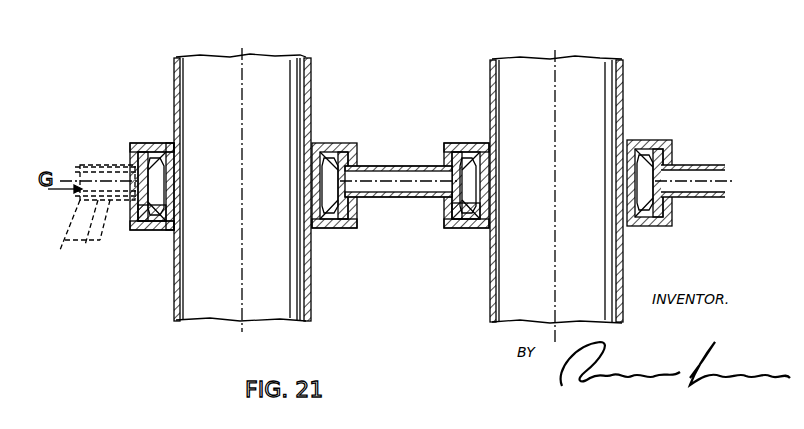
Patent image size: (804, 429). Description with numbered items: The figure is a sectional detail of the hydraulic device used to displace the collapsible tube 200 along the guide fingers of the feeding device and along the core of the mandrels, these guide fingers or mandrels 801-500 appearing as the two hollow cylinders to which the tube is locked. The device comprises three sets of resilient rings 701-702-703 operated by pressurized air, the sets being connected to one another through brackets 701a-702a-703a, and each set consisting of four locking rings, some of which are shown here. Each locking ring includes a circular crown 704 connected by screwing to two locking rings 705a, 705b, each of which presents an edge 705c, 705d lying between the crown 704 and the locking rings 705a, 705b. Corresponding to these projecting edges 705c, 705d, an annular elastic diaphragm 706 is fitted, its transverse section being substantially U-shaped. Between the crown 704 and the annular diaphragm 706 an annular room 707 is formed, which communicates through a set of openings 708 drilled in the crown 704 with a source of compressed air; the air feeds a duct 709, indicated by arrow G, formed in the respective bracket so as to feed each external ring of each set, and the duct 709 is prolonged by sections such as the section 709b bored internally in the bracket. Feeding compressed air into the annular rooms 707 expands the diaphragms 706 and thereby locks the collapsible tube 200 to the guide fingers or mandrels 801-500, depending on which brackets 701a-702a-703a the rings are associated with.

The collapsible tube 200 is at (176, 57).
The guide fingers or mandrels 801-500 is at (283, 95).
The circular crown 704 is at (132, 152).
The locking ring 705a is at (137, 143).
The locking ring 705b is at (138, 232).
The edge 705c is at (171, 140).
The edge 705d is at (170, 222).
The annular elastic diaphragm 706 is at (158, 231).
The annular room 707 is at (156, 144).
The openings 708 is at (425, 165).
The duct 709 is at (398, 185).
The duct section 709b is at (706, 195).
The sets of resilient rings 701-702-703 is at (447, 225).
The brackets 701a-702a-703a is at (88, 240).